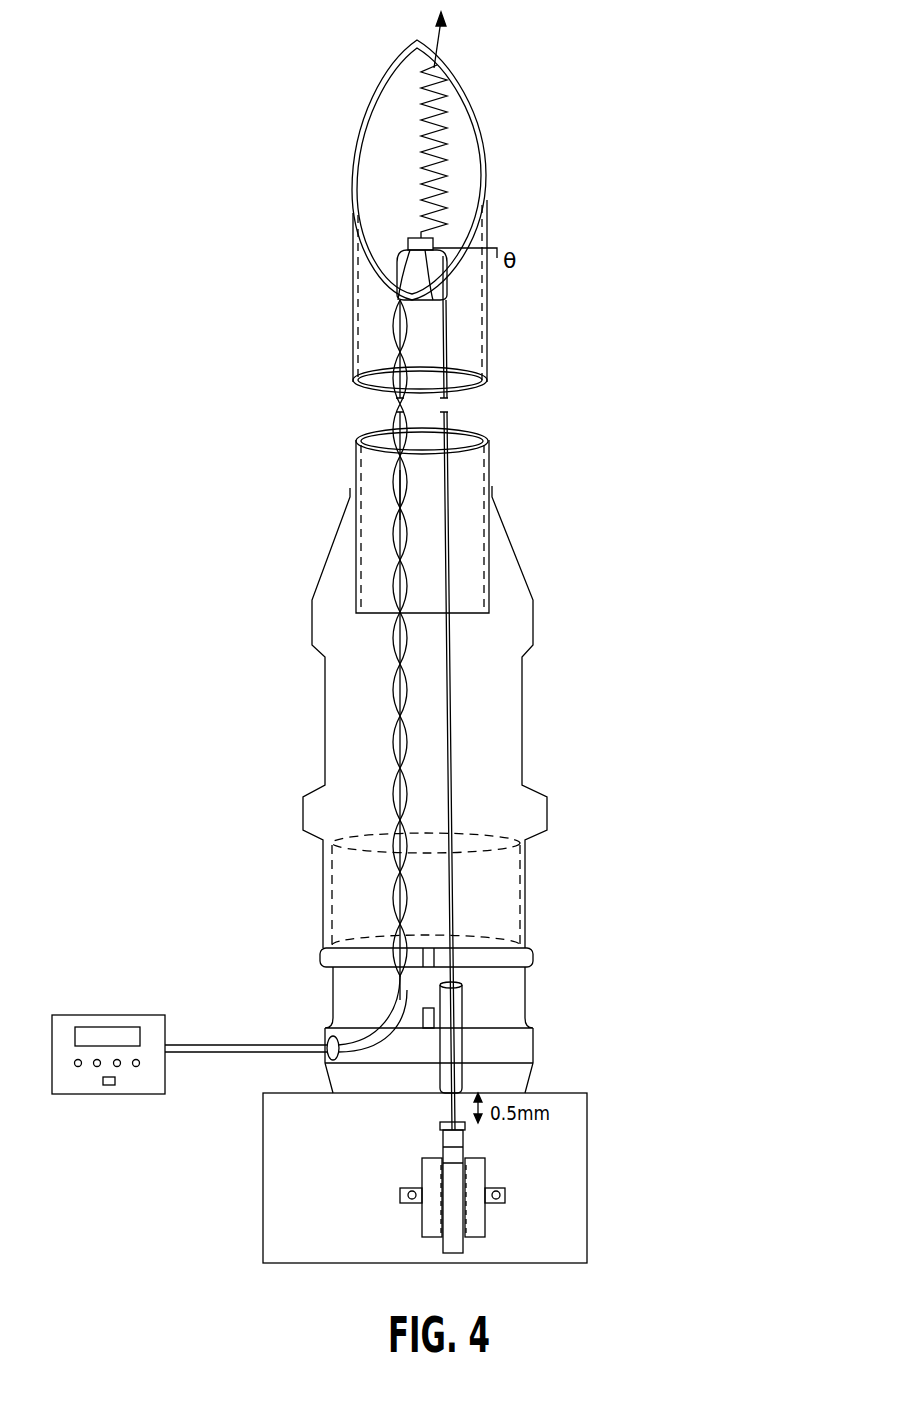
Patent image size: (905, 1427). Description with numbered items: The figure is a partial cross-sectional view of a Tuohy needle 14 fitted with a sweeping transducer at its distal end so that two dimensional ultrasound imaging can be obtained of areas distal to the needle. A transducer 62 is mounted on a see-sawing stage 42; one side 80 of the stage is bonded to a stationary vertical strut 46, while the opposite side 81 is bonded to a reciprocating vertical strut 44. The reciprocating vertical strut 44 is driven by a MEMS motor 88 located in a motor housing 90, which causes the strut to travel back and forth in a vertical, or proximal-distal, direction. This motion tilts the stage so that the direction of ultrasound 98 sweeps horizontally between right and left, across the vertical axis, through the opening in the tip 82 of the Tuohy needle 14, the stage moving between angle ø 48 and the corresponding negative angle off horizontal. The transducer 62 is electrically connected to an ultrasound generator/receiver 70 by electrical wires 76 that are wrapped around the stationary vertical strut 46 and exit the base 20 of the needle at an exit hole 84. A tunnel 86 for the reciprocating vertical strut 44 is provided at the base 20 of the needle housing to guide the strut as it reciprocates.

The Tuohy needle 14 is at (353, 356).
The base of the needle 20 is at (548, 812).
The see-sawing stage 42 is at (445, 306).
The reciprocating vertical strut 44 is at (443, 340).
The stationary vertical strut 46 is at (386, 443).
The angle ø 48 is at (497, 250).
The transducer 62 is at (408, 242).
The ultrasound generator/receiver 70 is at (88, 1096).
The electrical wires 76 is at (397, 494).
The one side of the stage 80 is at (402, 251).
The opposite side of the stage 81 is at (450, 258).
The tip of Tuohy needle 82 is at (472, 116).
The exit hole 84 is at (330, 1036).
The tunnel 86 is at (463, 1005).
The MEMS motor 88 is at (466, 1138).
The motor housing 90 is at (588, 1226).
The direction of ultrasound 98 is at (440, 42).